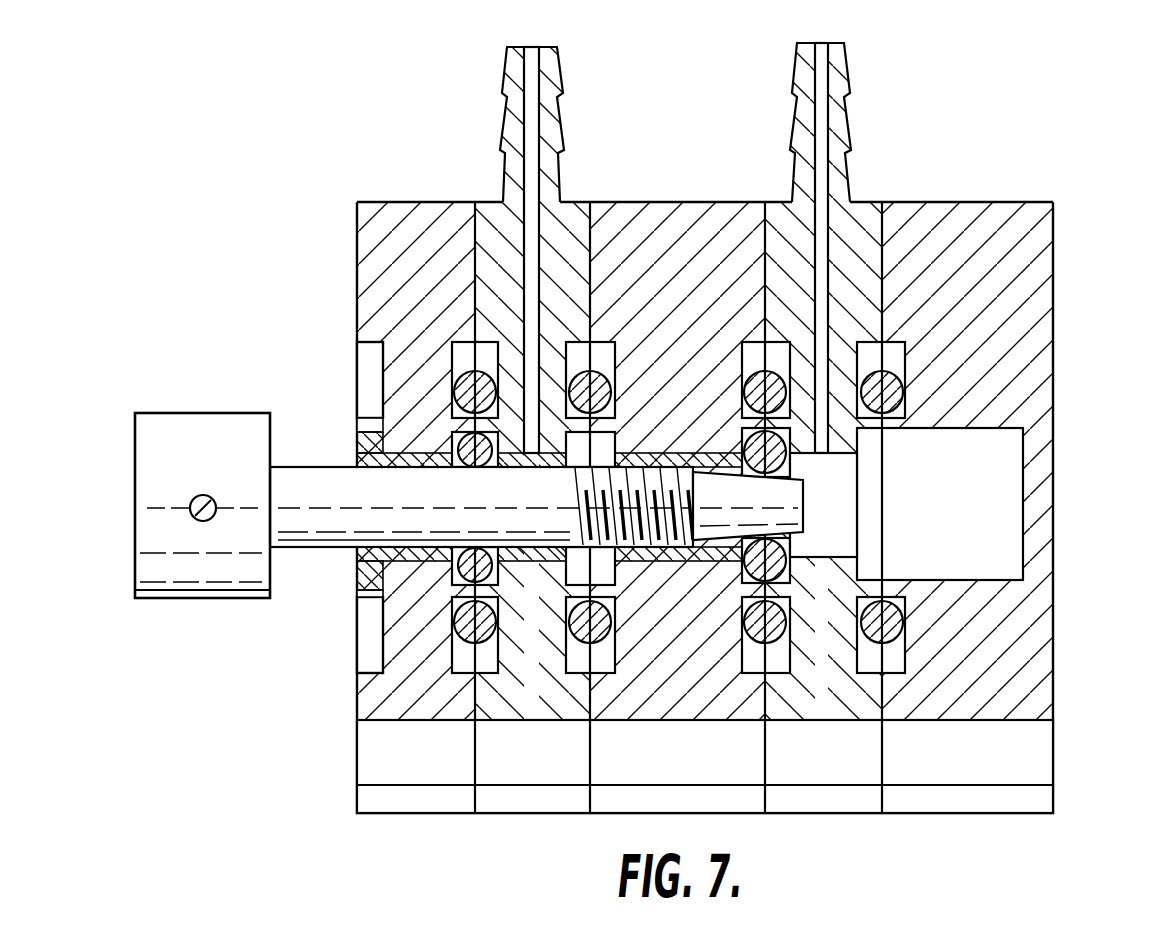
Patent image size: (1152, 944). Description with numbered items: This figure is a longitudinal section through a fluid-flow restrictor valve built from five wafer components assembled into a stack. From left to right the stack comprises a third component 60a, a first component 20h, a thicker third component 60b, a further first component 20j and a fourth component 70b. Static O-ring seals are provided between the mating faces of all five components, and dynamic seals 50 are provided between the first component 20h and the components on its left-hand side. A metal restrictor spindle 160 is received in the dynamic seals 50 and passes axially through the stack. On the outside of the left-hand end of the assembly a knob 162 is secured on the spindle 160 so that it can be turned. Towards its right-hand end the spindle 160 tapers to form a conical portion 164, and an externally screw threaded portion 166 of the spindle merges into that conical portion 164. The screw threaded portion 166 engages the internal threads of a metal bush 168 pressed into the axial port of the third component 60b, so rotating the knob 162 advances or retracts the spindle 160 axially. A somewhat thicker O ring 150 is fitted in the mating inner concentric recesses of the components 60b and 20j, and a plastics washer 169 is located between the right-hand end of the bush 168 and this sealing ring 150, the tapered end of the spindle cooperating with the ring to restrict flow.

The third component 60a is at (372, 262).
The first component 20h is at (572, 220).
The third component 60b is at (697, 214).
The first component 20j is at (860, 207).
The fourth component 70b is at (1040, 230).
The knob 162 is at (220, 430).
The restrictor spindle 160 is at (315, 527).
The dynamic seals 50 is at (467, 462).
The metal bush 168 is at (668, 455).
The externally screw threaded portion 166 is at (650, 545).
The plastics washer 169 is at (742, 558).
The O ring 150 is at (778, 463).
The conical portion 164 is at (783, 517).